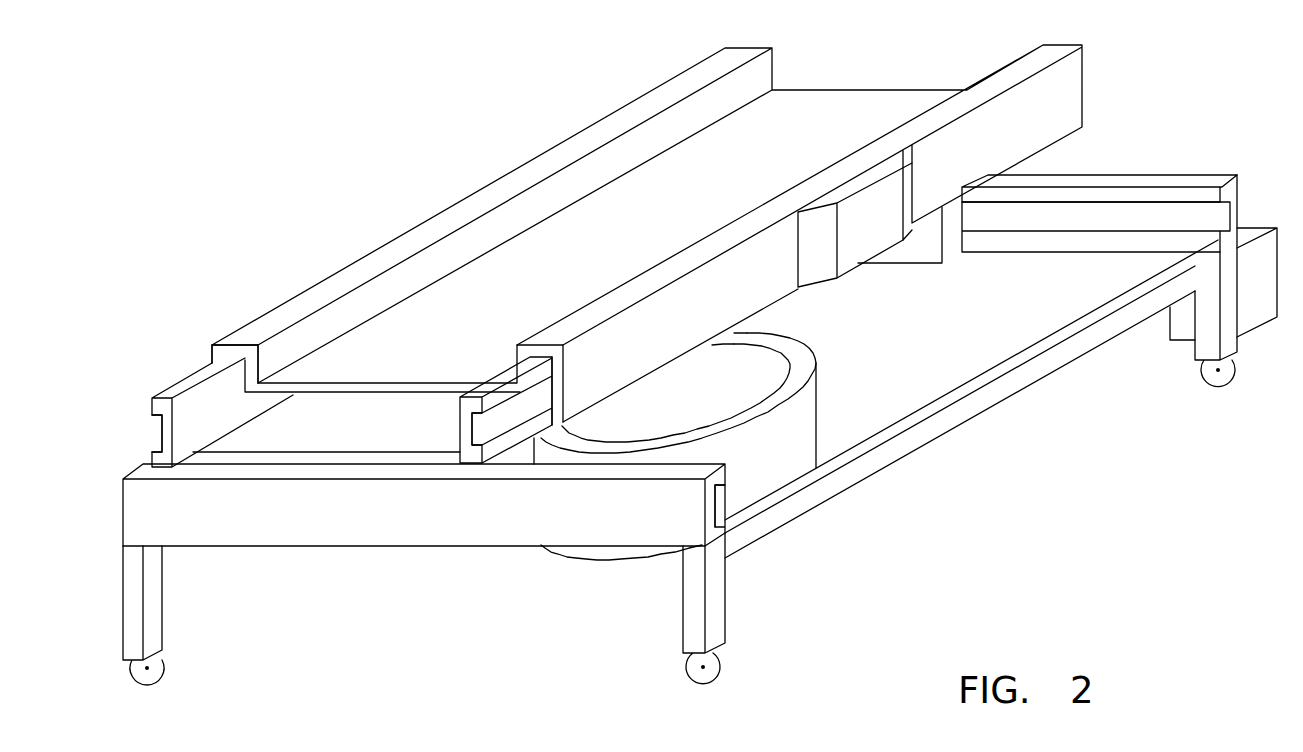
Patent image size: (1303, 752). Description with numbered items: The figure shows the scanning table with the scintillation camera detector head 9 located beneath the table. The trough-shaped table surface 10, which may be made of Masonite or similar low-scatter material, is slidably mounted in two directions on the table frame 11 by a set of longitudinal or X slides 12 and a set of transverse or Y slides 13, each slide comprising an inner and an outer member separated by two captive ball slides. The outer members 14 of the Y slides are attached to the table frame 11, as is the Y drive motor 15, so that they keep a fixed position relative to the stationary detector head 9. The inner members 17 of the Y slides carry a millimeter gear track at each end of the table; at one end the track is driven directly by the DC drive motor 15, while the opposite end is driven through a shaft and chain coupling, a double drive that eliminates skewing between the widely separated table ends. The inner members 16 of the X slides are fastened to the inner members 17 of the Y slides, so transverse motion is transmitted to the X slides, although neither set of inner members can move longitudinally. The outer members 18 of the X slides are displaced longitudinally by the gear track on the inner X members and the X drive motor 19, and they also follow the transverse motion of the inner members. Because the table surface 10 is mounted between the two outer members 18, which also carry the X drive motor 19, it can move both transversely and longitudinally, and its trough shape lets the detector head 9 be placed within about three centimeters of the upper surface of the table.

The camera detector head 9 is at (808, 362).
The table surface 10 is at (668, 212).
The table frame 11 is at (1022, 441).
The longitudinal slides 12 is at (243, 312).
The transverse slides 13 is at (344, 524).
The outer members of the transverse slides 14 is at (490, 540).
The Y drive motor 15 is at (1255, 327).
The inner members of the longitudinal slides 16 is at (213, 368).
The inner members of the transverse slides 17 is at (218, 459).
The outer members of the longitudinal slides 18 is at (213, 345).
The X drive motor 19 is at (854, 257).